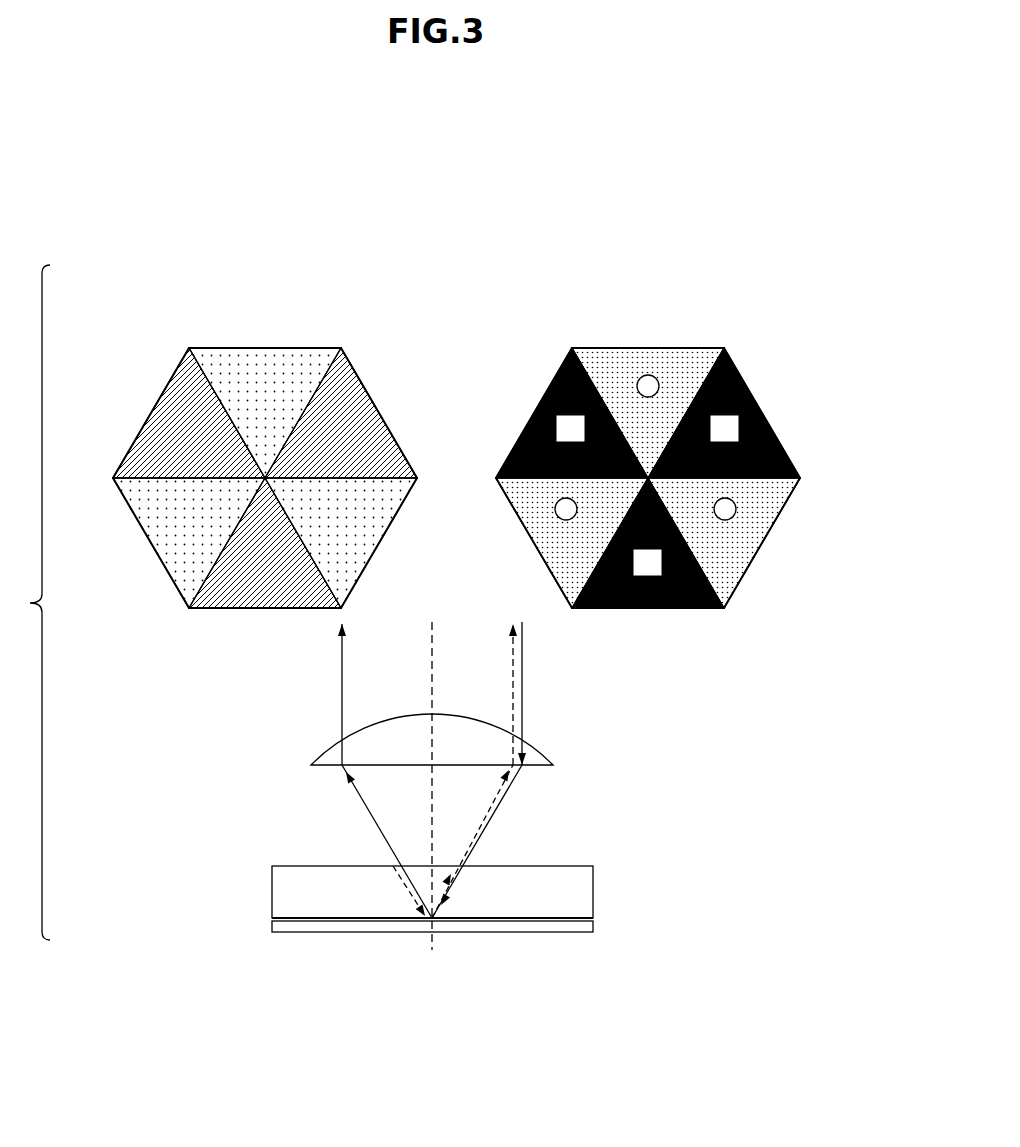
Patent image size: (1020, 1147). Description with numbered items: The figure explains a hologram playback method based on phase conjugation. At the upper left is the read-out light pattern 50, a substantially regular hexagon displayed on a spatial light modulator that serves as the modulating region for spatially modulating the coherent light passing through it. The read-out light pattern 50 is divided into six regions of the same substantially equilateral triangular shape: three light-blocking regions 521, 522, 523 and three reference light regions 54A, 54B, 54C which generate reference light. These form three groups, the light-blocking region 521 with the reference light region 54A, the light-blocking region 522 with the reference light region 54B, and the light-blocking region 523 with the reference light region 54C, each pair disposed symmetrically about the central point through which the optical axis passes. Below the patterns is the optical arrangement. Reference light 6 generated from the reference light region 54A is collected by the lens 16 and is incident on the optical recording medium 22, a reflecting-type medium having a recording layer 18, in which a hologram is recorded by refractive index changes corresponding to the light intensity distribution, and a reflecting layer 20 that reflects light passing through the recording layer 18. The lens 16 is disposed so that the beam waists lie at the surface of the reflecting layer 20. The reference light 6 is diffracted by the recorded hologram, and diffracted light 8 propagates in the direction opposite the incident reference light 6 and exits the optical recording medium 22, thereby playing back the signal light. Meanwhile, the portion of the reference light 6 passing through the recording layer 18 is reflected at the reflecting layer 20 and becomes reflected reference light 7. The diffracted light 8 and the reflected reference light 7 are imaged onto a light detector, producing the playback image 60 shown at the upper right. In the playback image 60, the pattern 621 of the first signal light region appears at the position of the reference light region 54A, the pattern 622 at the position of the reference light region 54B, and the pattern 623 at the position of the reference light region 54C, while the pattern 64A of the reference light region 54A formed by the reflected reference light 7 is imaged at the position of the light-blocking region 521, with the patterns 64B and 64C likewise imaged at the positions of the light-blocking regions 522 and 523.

The read-out light pattern 50 is at (252, 460).
The light-blocking region 521 is at (133, 440).
The light-blocking region 522 is at (384, 403).
The light-blocking region 523 is at (233, 609).
The reference light region 54A is at (380, 540).
The reference light region 54B is at (132, 516).
The reference light region 54C is at (240, 348).
The playback image 60 is at (655, 459).
The pattern of the signal light region 621 is at (764, 540).
The pattern of the signal light region 622 is at (556, 580).
The pattern of the signal light region 623 is at (616, 348).
The pattern of the reference light region 64A is at (558, 372).
The pattern of the reference light region 64B is at (760, 407).
The pattern of the reference light region 64C is at (677, 609).
The reference light 6 is at (525, 680).
The reflected reference light 7 is at (376, 826).
The diffracted light 8 is at (486, 826).
The lens 16 is at (552, 752).
The recording layer 18 is at (593, 897).
The reflecting layer 20 is at (593, 925).
The optical recording medium 22 is at (482, 902).